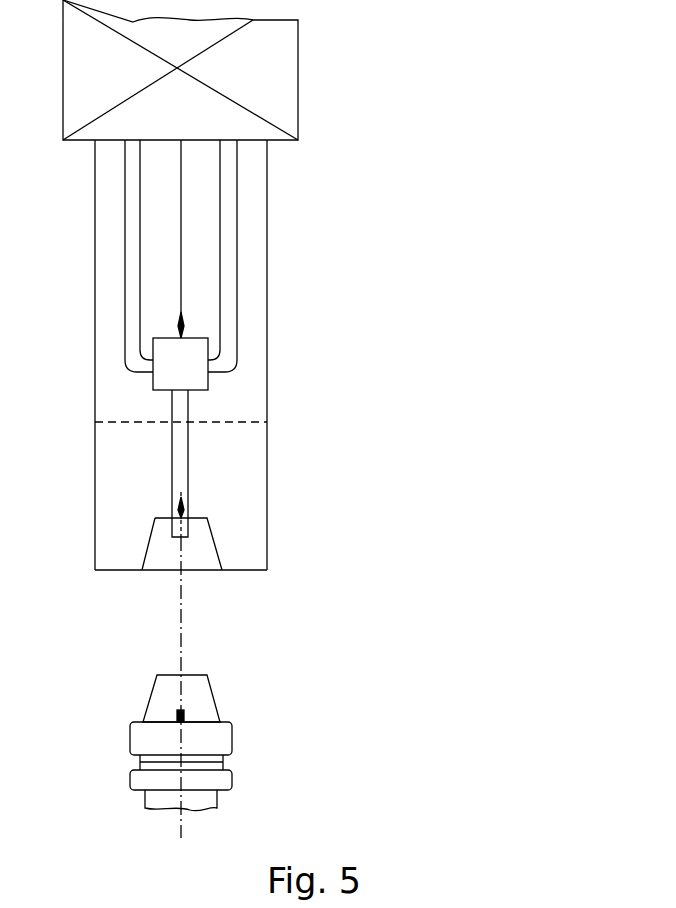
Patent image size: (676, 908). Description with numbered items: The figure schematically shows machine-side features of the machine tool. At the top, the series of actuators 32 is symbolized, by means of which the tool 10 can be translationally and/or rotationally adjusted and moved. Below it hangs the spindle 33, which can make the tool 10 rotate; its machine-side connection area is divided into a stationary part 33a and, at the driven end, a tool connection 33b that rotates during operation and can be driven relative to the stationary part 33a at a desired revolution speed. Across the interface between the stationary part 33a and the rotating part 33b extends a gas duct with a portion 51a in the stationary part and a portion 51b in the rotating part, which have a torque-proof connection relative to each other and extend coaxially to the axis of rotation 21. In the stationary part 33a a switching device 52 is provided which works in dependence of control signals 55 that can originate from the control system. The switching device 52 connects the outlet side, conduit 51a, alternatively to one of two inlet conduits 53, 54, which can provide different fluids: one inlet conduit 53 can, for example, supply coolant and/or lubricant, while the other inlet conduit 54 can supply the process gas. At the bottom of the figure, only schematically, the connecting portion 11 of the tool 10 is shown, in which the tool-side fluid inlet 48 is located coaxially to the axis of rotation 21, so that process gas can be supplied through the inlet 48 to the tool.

The tool 10 is at (265, 782).
The connecting portion 11 is at (220, 713).
The axis of rotation 21 is at (181, 625).
The actuators 32 is at (292, 68).
The spindle 33 is at (255, 282).
The stationary part 33a is at (257, 413).
The tool connection 33b is at (257, 515).
The fluid inlet 48 is at (178, 717).
The gas duct portion in the stationary part 51a is at (187, 398).
The gas duct portion in the rotating part 51b is at (188, 508).
The switching device 52 is at (168, 382).
The inlet conduit 53 is at (133, 243).
The inlet conduit 54 is at (230, 247).
The control signals 55 is at (181, 217).